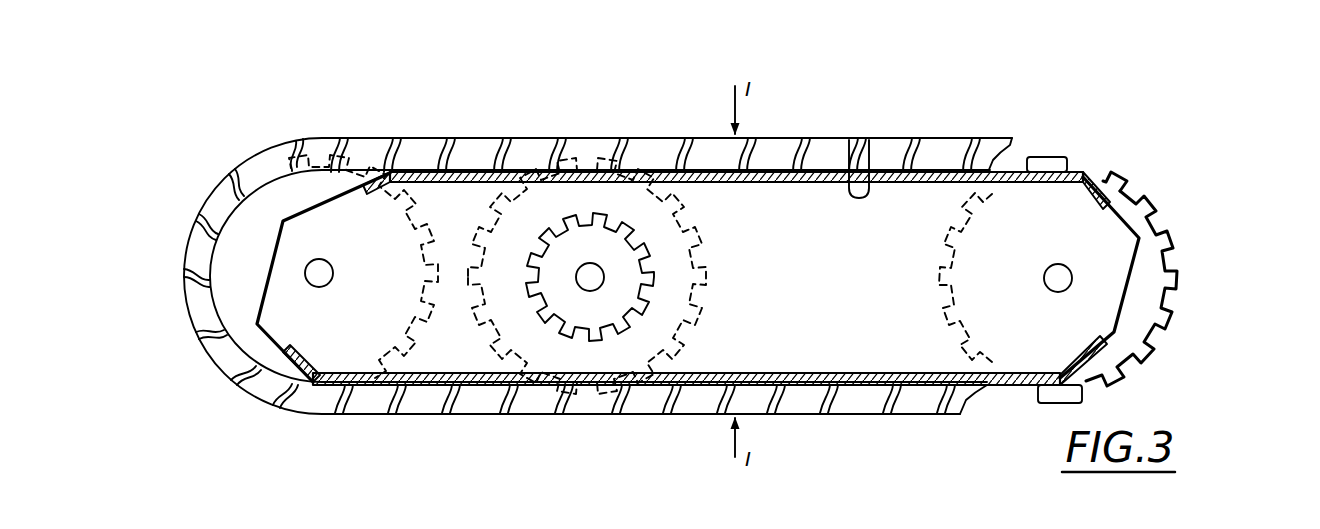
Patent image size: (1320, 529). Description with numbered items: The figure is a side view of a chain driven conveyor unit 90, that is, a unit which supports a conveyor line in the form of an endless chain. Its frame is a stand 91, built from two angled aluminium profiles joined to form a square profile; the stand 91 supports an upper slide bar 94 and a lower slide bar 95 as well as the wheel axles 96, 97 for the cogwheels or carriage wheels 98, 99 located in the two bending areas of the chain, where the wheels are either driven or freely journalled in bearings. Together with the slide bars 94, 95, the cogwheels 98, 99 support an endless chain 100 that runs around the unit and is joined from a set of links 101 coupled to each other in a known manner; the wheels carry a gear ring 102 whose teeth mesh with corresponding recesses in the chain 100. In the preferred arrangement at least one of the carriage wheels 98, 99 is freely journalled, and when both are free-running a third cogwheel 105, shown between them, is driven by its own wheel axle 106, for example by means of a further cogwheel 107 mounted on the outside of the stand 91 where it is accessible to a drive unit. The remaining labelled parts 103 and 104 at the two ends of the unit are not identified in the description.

The conveyor unit 90 is at (952, 116).
The stand 91 is at (768, 232).
The slide bar 94 is at (849, 150).
The slide bar 95 is at (870, 370).
The wheel axle 96 is at (314, 273).
The wheel axle 97 is at (1063, 278).
The cogwheel 98 is at (322, 192).
The cogwheel 99 is at (1147, 290).
The endless chain 100 is at (481, 132).
The links 101 is at (530, 404).
The gear ring 102 is at (1126, 174).
The front curved track section 103 is at (225, 134).
The rear track section 104 is at (1101, 139).
The third cogwheel 105 is at (695, 238).
The wheel axle 106 is at (586, 273).
The cogwheel 107 is at (552, 243).